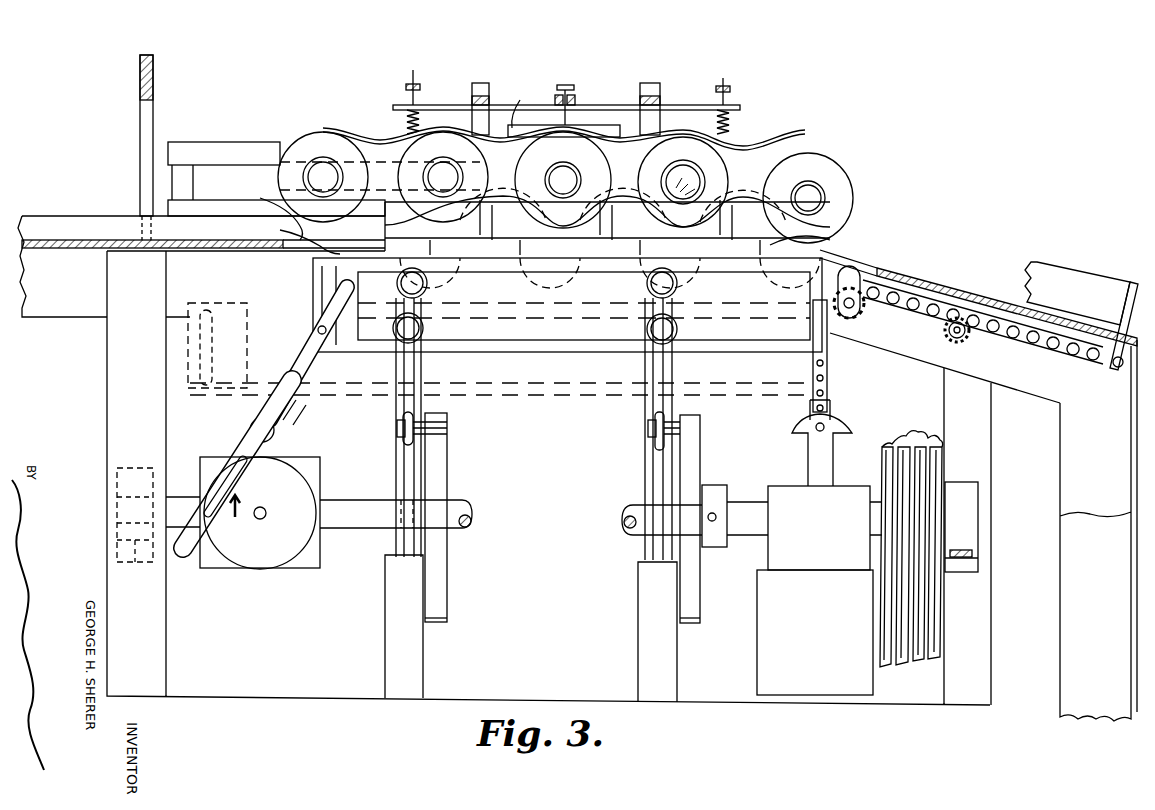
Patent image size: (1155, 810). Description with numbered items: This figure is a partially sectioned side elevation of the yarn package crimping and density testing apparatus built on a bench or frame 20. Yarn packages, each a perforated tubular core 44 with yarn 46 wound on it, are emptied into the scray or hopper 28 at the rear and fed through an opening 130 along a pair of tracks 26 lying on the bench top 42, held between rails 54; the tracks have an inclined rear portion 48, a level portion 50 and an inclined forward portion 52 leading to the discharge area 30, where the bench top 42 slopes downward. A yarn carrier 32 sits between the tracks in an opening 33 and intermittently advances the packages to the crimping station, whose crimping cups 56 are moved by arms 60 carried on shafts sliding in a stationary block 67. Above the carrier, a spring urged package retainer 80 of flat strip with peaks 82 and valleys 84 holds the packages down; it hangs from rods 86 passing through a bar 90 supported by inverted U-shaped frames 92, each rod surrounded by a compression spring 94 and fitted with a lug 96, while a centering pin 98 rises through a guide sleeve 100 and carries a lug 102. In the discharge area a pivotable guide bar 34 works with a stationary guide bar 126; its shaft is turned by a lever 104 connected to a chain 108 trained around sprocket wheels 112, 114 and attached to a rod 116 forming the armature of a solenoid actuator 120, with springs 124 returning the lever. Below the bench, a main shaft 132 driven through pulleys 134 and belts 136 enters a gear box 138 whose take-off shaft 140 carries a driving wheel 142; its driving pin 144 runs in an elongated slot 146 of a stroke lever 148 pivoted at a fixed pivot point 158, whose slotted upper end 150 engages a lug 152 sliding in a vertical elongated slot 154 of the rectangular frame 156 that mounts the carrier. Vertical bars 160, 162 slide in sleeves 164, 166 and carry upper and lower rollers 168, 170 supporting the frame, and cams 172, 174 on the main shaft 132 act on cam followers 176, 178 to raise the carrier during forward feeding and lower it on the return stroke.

The bench or frame 20 is at (915, 200).
The tracks 26 is at (99, 225).
The scray or hopper 28 is at (100, 147).
The discharge area 30 is at (1000, 270).
The yarn carrier 32 is at (748, 186).
The opening 33 is at (273, 212).
The guide bar 34 is at (1072, 282).
The bench top 42 is at (202, 250).
The tubular core 44 is at (325, 162).
The yarn 46 is at (866, 182).
The inclined rear portion 48 is at (203, 206).
The level portion 50 is at (592, 226).
The inclined forward portion 52 is at (825, 247).
The rails 54 is at (224, 150).
The crimping cups 56 is at (610, 136).
The arm 60 is at (640, 105).
The stationary block 67 is at (529, 96).
The package retainer 80 is at (340, 118).
The peaks 82 is at (439, 135).
The valleys 84 is at (524, 126).
The rods 86 is at (411, 72).
The bar 90 is at (586, 120).
The inverted U-shaped frames 92 is at (482, 90).
The compression spring 94 is at (407, 123).
The lug 96 is at (406, 90).
The centering or guiding pin 98 is at (585, 106).
The guide sleeve 100 is at (561, 85).
The lug 102 is at (566, 85).
The lever 104 is at (1110, 372).
The chain 108 is at (828, 374).
The sprocket wheel 112 is at (959, 340).
The sprocket wheel 114 is at (868, 322).
The rod 116 is at (832, 465).
The solenoid actuator 120 is at (791, 496).
The springs 124 is at (1118, 388).
The stationary guide bar 126 is at (1122, 300).
The opening 130 is at (156, 120).
The main shaft 132 is at (740, 545).
The pulleys 134 is at (883, 444).
The belts 136 is at (920, 442).
The gear box 138 is at (310, 568).
The take-off shaft 140 is at (267, 510).
The driving wheel 142 is at (265, 562).
The driving pin 144 is at (241, 523).
The elongated slot 146 is at (228, 470).
The stroke lever 148 is at (300, 412).
The slot 150 is at (300, 374).
The lug 152 is at (300, 333).
The vertical elongated slot 154 is at (332, 283).
The rectangular frame 156 is at (550, 406).
The fixed pivot point 158 is at (252, 425).
The vertical bar 160 is at (395, 463).
The vertical bar 162 is at (645, 468).
The vertical sleeve 164 is at (425, 669).
The vertical sleeve 166 is at (640, 655).
The upper roller 168 is at (428, 285).
The lower roller 170 is at (424, 329).
The cam 172 is at (440, 470).
The cam 174 is at (690, 622).
The cam follower 176 is at (448, 423).
The cam follower 178 is at (700, 425).